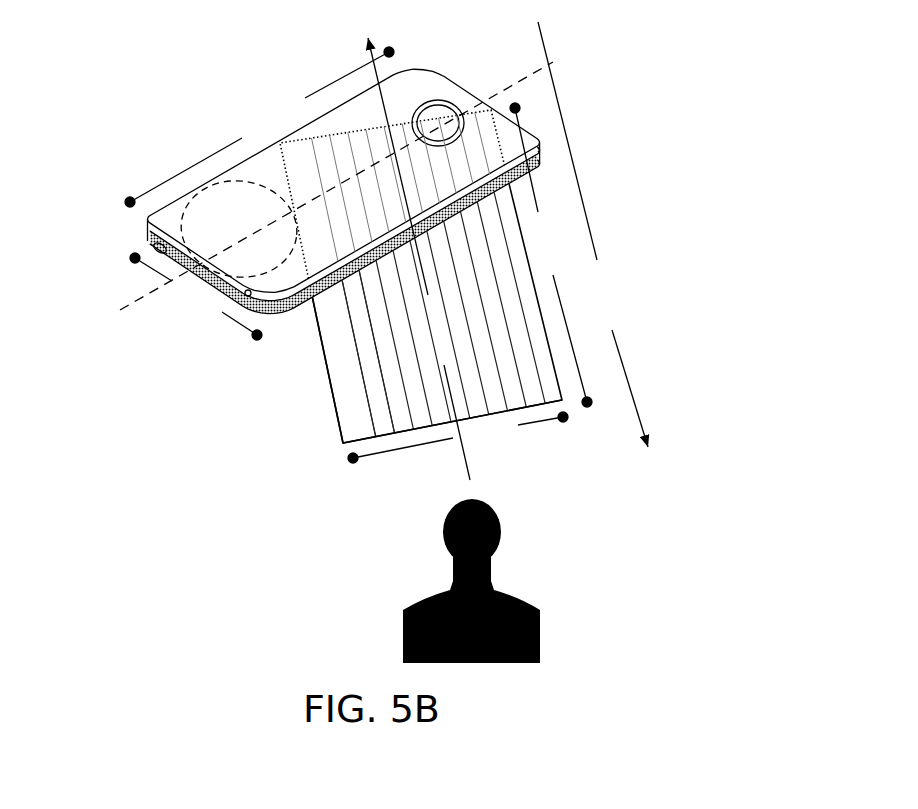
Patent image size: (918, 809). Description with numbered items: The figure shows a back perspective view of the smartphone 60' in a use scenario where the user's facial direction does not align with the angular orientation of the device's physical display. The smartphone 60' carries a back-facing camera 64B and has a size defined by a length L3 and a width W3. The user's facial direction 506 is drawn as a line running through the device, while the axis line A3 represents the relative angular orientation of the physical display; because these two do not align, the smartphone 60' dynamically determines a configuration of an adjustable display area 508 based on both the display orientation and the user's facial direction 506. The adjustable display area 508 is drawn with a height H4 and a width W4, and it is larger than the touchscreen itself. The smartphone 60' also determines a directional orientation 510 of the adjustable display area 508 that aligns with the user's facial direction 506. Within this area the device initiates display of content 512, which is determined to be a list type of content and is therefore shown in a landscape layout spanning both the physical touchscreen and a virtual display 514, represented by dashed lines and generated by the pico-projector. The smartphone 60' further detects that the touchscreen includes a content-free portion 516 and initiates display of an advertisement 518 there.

The smartphone 60' is at (344, 168).
The back-facing camera 64B is at (441, 100).
The user's facial direction 506 is at (421, 259).
The adjustable display area 508 is at (334, 403).
The directional orientation 510 is at (593, 234).
The content 512 is at (343, 328).
The virtual display 514 is at (338, 432).
The content-free portion 516 is at (152, 245).
The advertisement 518 is at (257, 200).
The length L3 is at (259, 127).
The width W3 is at (196, 296).
The height H4 is at (551, 255).
The width W4 is at (458, 437).
The axis line A3 is at (342, 189).